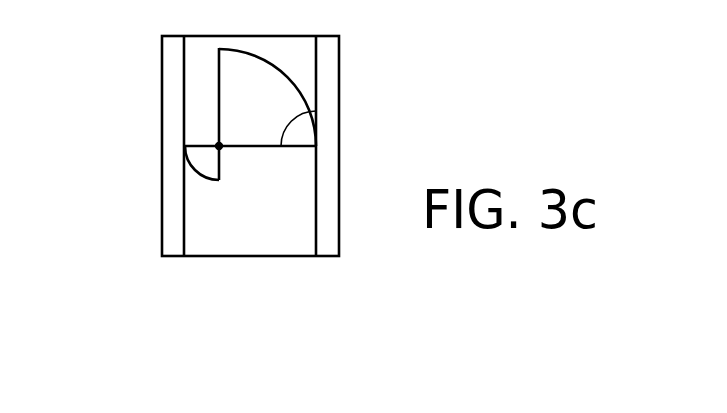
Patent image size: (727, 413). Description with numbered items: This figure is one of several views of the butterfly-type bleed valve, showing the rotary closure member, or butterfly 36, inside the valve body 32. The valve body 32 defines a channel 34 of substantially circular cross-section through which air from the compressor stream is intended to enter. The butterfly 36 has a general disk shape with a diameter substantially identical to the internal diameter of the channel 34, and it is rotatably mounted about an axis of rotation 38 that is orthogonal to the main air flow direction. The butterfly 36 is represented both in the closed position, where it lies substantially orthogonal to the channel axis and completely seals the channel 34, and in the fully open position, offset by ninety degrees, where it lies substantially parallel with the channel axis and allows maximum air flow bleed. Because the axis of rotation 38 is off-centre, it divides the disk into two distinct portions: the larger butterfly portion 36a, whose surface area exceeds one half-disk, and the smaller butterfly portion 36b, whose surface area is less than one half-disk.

The valve body 32 is at (173, 241).
The channel 34 is at (248, 223).
The rotary closure member 36 is at (216, 74).
The butterfly portion 36a is at (316, 111).
The butterfly portion 36b is at (200, 152).
The axis of rotation 38 is at (219, 146).